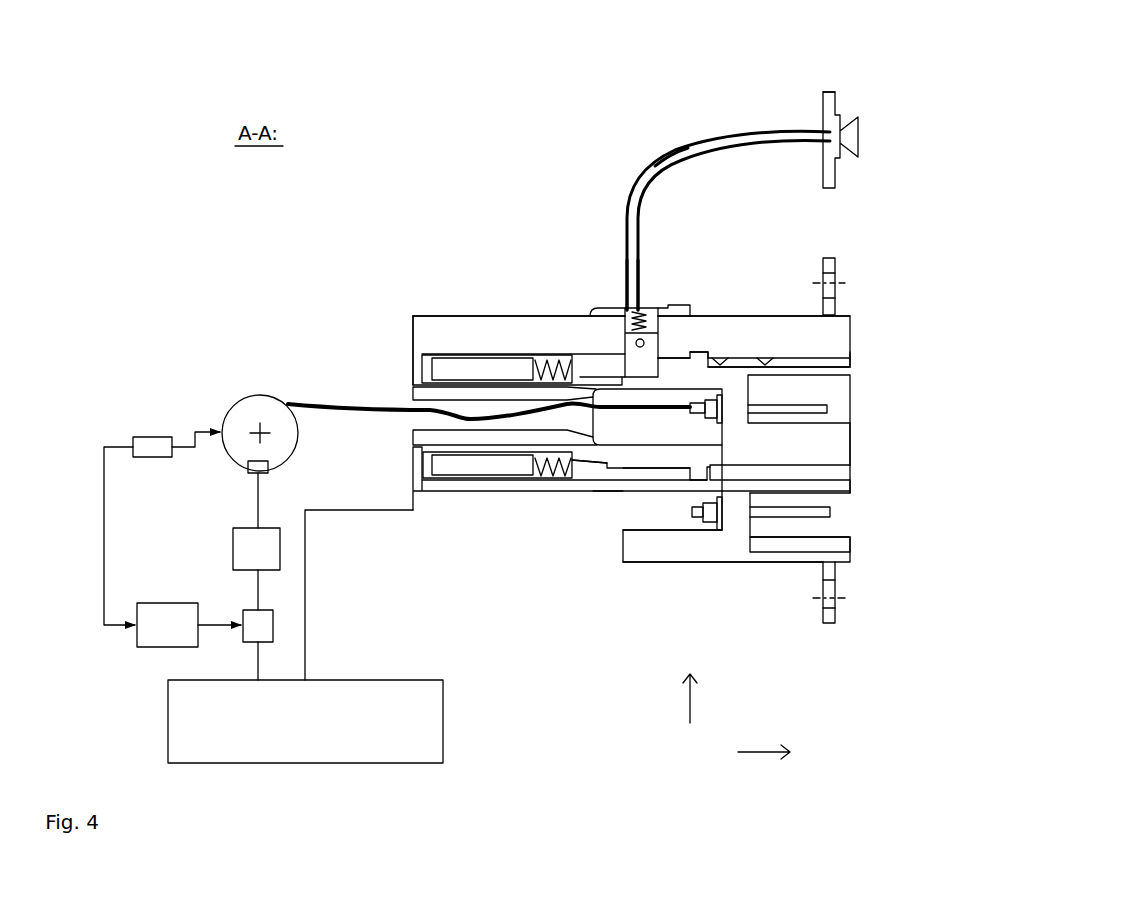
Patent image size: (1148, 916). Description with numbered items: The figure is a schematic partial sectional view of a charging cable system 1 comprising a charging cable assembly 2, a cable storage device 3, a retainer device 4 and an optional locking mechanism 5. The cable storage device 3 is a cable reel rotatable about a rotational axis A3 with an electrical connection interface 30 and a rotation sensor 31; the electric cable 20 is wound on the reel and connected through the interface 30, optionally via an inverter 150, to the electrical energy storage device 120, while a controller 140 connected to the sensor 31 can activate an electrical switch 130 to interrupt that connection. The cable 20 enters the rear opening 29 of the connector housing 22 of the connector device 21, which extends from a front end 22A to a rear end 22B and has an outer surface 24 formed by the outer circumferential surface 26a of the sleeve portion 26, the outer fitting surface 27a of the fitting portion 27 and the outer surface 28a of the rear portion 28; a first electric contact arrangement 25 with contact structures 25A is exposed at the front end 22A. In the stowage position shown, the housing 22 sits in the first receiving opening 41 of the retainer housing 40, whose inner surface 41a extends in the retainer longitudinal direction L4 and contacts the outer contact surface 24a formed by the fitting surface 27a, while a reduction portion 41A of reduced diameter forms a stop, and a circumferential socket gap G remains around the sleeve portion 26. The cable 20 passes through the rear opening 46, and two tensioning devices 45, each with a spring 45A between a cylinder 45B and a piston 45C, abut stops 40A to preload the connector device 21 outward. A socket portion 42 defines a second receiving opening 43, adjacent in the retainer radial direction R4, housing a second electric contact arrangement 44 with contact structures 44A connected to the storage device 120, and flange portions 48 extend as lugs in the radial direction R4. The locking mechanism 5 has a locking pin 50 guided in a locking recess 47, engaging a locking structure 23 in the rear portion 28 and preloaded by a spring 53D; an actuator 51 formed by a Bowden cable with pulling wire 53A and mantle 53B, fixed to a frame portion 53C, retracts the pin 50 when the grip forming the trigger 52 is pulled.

The charging cable system 1 is at (538, 144).
The charging cable assembly 2 is at (337, 362).
The cable storage device 3 is at (224, 407).
The retainer device 4 is at (458, 301).
The locking mechanism 5 is at (530, 205).
The electric cable 20 is at (306, 404).
The connector device 21 is at (869, 415).
The connector housing 22 is at (733, 480).
The front end 22A is at (850, 460).
The rear end 22B is at (412, 396).
The locking structure 23 is at (622, 373).
The outer surface 24 is at (668, 470).
The outer contact surface 24a is at (716, 368).
The first electric contact arrangement 25 is at (861, 391).
The electrical contact structures 25A is at (830, 409).
The sleeve portion 26 is at (789, 362).
The outer circumferential surface 26a is at (817, 356).
The fitting portion 27 is at (695, 489).
The outer fitting surface 27a is at (680, 308).
The rear portion 28 is at (582, 471).
The outer surface of rear portion 28a is at (607, 468).
The rear opening 29 is at (442, 433).
The electrical connection interface 30 is at (248, 470).
The rotation sensor 31 is at (155, 437).
The retainer housing 40 is at (494, 316).
The stop 40A is at (413, 467).
The first receiving opening 41 is at (748, 352).
The inner surface 41a is at (699, 355).
The reduction portion 41A is at (610, 495).
The socket portion 42 is at (790, 566).
The second receiving opening 43 is at (825, 494).
The second electric contact arrangement 44 is at (866, 520).
The electrical contact structures 44A is at (805, 514).
The tensioning device 45 is at (448, 350).
The spring 45A is at (547, 364).
The cylinder 45B is at (512, 486).
The piston 45C is at (440, 468).
The rear opening 46 is at (407, 430).
The locking recess 47 is at (598, 306).
The flange portions 48 is at (830, 258).
The locking pin 50 is at (637, 307).
The actuator 51 is at (670, 157).
The trigger 52 is at (858, 136).
The pulling wire 53A is at (655, 170).
The mantle 53B is at (735, 136).
The frame portion 53C is at (836, 92).
The spring 53D is at (605, 308).
The electrical energy storage device 120 is at (315, 735).
The electrical switch 130 is at (273, 628).
The controller 140 is at (160, 603).
The inverter 150 is at (233, 547).
The rotational axis A3 is at (258, 428).
The socket gap G is at (850, 362).
The retainer radial direction R4 is at (686, 710).
The retainer longitudinal direction L4 is at (755, 755).